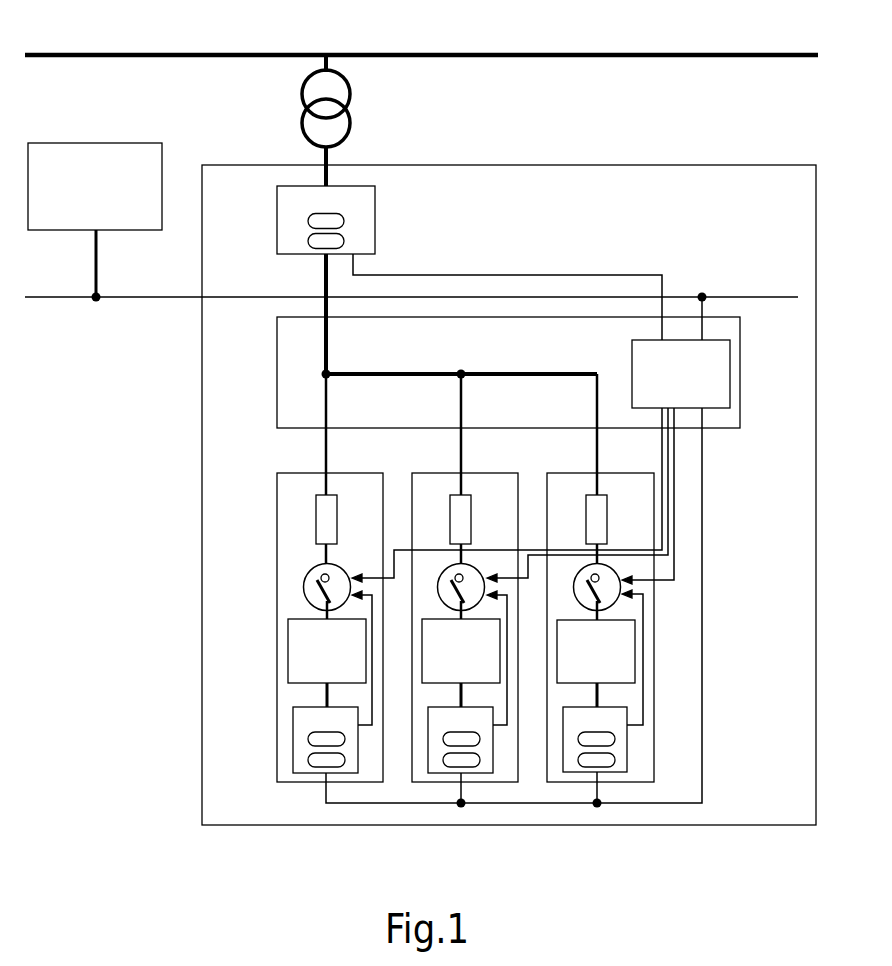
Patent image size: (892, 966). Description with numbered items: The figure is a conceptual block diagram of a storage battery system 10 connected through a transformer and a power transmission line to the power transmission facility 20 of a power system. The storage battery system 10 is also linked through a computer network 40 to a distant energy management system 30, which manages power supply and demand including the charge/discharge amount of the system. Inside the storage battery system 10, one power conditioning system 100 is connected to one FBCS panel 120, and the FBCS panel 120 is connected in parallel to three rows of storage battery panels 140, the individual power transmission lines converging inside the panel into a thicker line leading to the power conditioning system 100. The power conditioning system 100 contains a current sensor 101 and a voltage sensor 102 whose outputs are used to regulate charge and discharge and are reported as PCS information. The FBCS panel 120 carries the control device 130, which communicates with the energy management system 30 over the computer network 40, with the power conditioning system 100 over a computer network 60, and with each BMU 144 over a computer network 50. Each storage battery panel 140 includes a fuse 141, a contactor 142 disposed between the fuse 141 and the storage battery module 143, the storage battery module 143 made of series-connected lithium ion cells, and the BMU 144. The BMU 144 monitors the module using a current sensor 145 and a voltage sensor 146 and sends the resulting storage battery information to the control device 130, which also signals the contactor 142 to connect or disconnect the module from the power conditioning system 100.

The storage battery system 10 is at (528, 163).
The power transmission facility 20 is at (195, 53).
The energy management system (EMS) 30 is at (98, 142).
The computer network 40 is at (150, 295).
The computer network 50 is at (703, 742).
The computer network 60 is at (494, 274).
The power conditioning system (PCS) 100 is at (334, 226).
The current sensor 101 is at (308, 221).
The voltage sensor 102 is at (308, 241).
The front battery control station panel (FBCS panel) 120 is at (277, 372).
The control device 130 is at (731, 372).
The storage battery panel 140 is at (290, 473).
The fuse 141 is at (316, 520).
The contactor 142 is at (304, 585).
The storage battery module 143 is at (288, 643).
The battery management unit (BMU) 144 is at (288, 743).
The current sensor 145 is at (308, 740).
The voltage sensor 146 is at (308, 760).